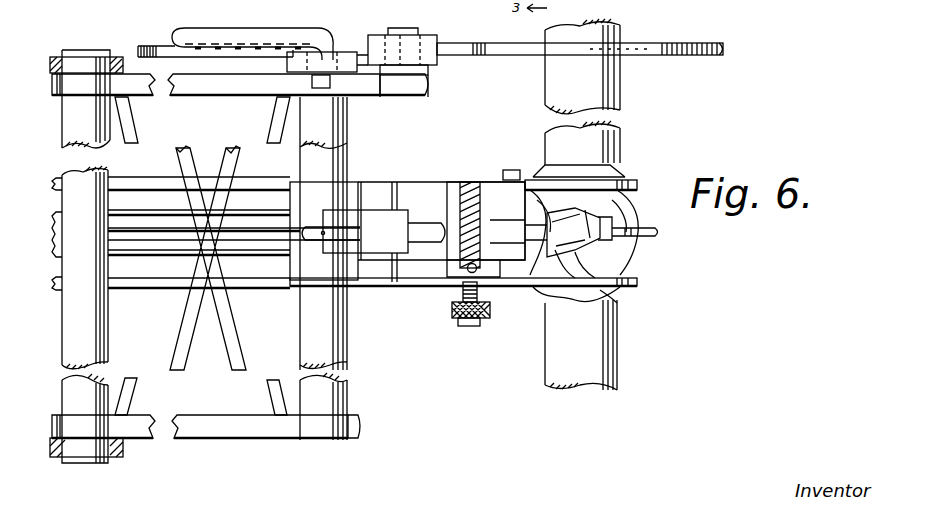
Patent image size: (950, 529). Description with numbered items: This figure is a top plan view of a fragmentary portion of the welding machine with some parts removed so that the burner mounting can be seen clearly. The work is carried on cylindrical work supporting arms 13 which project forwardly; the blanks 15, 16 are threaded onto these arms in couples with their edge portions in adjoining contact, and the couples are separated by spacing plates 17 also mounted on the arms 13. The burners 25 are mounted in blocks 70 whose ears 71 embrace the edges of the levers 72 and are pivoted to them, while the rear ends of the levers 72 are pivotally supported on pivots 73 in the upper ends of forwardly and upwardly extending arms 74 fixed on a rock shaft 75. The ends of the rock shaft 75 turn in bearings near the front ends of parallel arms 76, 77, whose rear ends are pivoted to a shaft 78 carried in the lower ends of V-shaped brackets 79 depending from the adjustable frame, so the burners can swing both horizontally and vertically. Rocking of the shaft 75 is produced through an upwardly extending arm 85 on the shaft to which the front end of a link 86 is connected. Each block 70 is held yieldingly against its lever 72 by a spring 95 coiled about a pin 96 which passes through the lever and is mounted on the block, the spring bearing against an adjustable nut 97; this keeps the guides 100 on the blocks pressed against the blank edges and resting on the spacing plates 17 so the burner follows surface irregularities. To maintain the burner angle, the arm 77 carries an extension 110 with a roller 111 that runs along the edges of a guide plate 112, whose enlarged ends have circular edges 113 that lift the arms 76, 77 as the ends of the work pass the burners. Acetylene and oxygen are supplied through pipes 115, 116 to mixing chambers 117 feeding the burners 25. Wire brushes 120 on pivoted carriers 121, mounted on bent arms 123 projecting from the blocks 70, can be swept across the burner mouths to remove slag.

The work supporting arms 13 is at (620, 127).
The blank 15 is at (590, 163).
The blank 16 is at (633, 207).
The spacing plates 17 is at (643, 160).
The burners 25 is at (560, 243).
The blocks 70 is at (442, 195).
The ears 71 is at (478, 188).
The levers 72 is at (420, 262).
The pivots 73 is at (360, 262).
The arms 74 is at (393, 227).
The rock shaft 75 is at (347, 106).
The arm 76 is at (213, 436).
The arm 77 is at (152, 97).
The shaft 78 is at (80, 62).
The brackets 79 is at (62, 58).
The arm 85 is at (320, 66).
The link 86 is at (254, 36).
The springs 95 is at (455, 320).
The pins 96 is at (477, 327).
The adjustable nuts 97 is at (462, 327).
The guides 100 is at (513, 170).
The extension 110 is at (428, 86).
The roller 111 is at (432, 40).
The guide plate 112 is at (152, 46).
The circular edges 113 is at (723, 50).
The pipe 115 is at (302, 238).
The pipe 116 is at (322, 256).
The mixing chambers 117 is at (400, 200).
The wire brushes 120 is at (578, 252).
The carriers 121 is at (590, 250).
The bent arms 123 is at (617, 302).